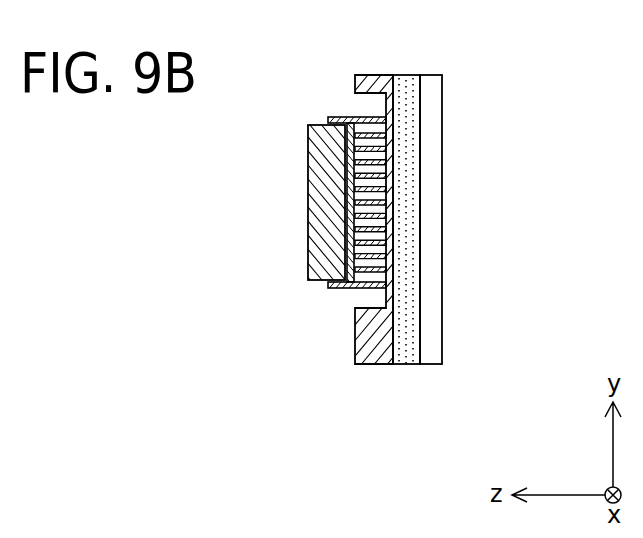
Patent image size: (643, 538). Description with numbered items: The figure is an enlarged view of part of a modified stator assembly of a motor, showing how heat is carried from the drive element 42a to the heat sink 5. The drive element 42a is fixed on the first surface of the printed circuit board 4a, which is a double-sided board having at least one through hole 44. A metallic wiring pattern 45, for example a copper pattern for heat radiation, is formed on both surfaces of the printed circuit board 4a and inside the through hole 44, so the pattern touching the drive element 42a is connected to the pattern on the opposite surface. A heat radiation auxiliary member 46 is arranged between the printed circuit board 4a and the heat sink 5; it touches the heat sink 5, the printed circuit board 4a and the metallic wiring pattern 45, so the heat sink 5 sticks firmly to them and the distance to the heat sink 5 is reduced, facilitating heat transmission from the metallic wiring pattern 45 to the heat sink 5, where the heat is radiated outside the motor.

The printed circuit board 4a is at (365, 88).
The heat radiation auxiliary member 46 is at (405, 90).
The heat sink 5 is at (430, 133).
The drive element 42a is at (310, 198).
The metallic wiring pattern 45 is at (345, 291).
The through hole 44 is at (360, 310).